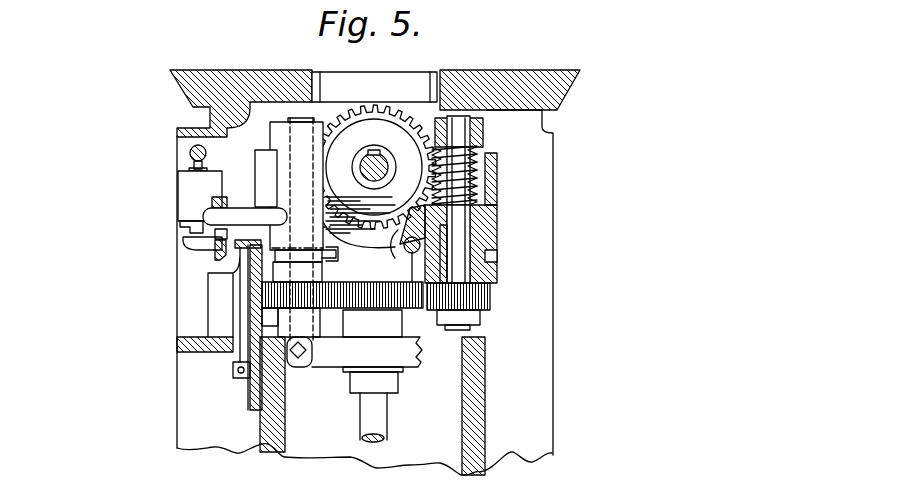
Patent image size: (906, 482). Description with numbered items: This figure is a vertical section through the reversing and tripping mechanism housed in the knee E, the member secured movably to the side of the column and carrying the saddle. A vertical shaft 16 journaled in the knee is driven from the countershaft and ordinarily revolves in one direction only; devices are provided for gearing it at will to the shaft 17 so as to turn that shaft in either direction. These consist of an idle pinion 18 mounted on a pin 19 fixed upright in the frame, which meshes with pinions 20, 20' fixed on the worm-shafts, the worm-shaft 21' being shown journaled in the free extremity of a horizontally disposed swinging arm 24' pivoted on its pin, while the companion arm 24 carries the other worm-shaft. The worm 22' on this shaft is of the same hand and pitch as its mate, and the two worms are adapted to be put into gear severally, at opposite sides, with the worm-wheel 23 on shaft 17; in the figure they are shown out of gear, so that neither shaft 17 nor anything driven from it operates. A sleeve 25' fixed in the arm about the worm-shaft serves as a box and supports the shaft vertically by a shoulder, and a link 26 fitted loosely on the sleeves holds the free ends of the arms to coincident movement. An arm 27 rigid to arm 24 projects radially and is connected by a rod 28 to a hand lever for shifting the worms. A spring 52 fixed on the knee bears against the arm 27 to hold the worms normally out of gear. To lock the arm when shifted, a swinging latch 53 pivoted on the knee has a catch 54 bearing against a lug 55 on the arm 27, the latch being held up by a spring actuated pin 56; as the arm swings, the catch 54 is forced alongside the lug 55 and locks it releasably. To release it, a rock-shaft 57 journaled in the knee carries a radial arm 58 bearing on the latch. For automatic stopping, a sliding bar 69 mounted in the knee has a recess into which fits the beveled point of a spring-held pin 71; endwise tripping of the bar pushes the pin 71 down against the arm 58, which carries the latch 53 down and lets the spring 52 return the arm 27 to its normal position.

The shaft 16 is at (378, 422).
The shaft 17 is at (388, 164).
The idle pinion 18 is at (302, 295).
The pin 19 is at (295, 118).
The pinion 20 is at (181, 327).
The pinion 20' is at (479, 306).
The worm-shaft 21' is at (495, 237).
The worm 22' is at (480, 175).
The worm-wheel 23 is at (400, 115).
The swinging arm 24 is at (280, 186).
The swinging arm 24' is at (485, 199).
The sleeve 25' is at (488, 247).
The link 26 is at (381, 238).
The arm 27 is at (210, 226).
The rod 28 is at (212, 200).
The spring 52 is at (248, 286).
The swinging latch 53 is at (214, 256).
The catch 54 is at (215, 236).
The lug 55 is at (216, 240).
The spring actuated pin 56 is at (227, 273).
The rock-shaft 57 is at (423, 312).
The radial arm 58 is at (183, 241).
The sliding bar 69 is at (189, 152).
The pin 71 is at (195, 222).
The knee E is at (565, 97).